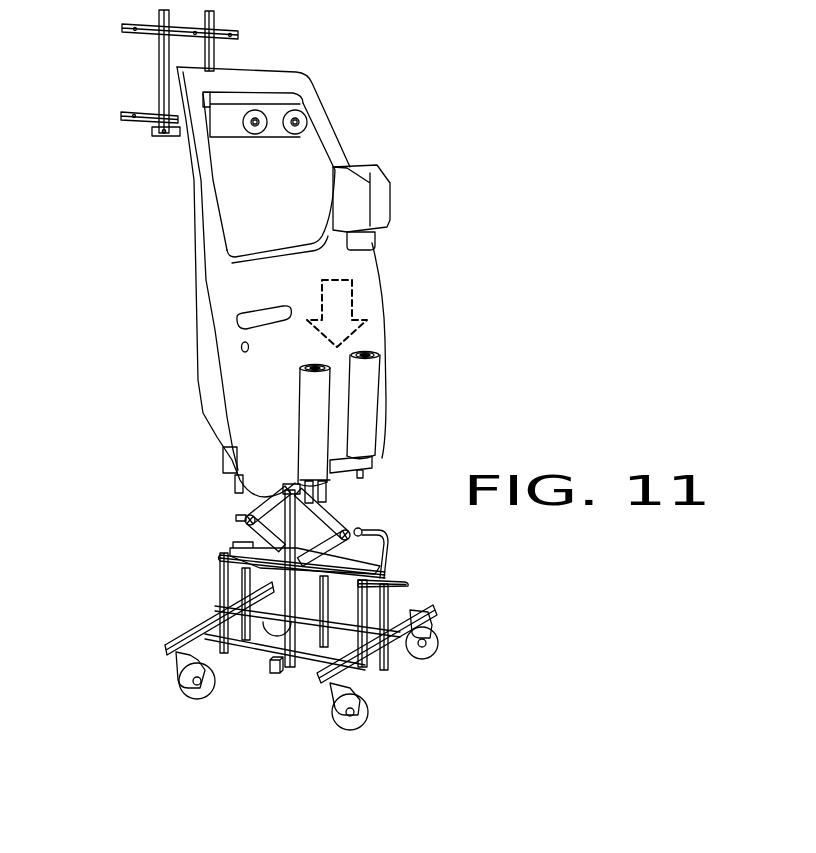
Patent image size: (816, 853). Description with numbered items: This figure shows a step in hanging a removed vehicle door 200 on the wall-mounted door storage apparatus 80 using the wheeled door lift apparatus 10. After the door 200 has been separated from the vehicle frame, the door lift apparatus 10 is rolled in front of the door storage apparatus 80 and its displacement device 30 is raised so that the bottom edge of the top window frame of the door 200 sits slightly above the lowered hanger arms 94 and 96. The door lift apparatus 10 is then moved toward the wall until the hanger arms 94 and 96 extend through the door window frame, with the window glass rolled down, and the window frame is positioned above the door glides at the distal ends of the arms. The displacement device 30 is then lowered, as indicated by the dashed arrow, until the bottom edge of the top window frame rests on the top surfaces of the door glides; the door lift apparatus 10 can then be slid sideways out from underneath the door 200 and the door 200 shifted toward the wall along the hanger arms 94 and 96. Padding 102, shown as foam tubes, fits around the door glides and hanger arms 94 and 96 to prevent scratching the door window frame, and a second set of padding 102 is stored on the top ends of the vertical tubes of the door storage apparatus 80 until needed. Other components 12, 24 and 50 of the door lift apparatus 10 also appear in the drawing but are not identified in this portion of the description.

The door lift apparatus 10 is at (208, 597).
The foot block 12 is at (272, 678).
The caster 24 is at (181, 682).
The displacement device 30 is at (243, 523).
The support cylinder 50 is at (305, 442).
The door storage apparatus 80 is at (153, 68).
The hanger arm 94 is at (177, 128).
The hanger arm 96 is at (298, 120).
The padding 102 is at (245, 106).
The door 200 is at (253, 295).